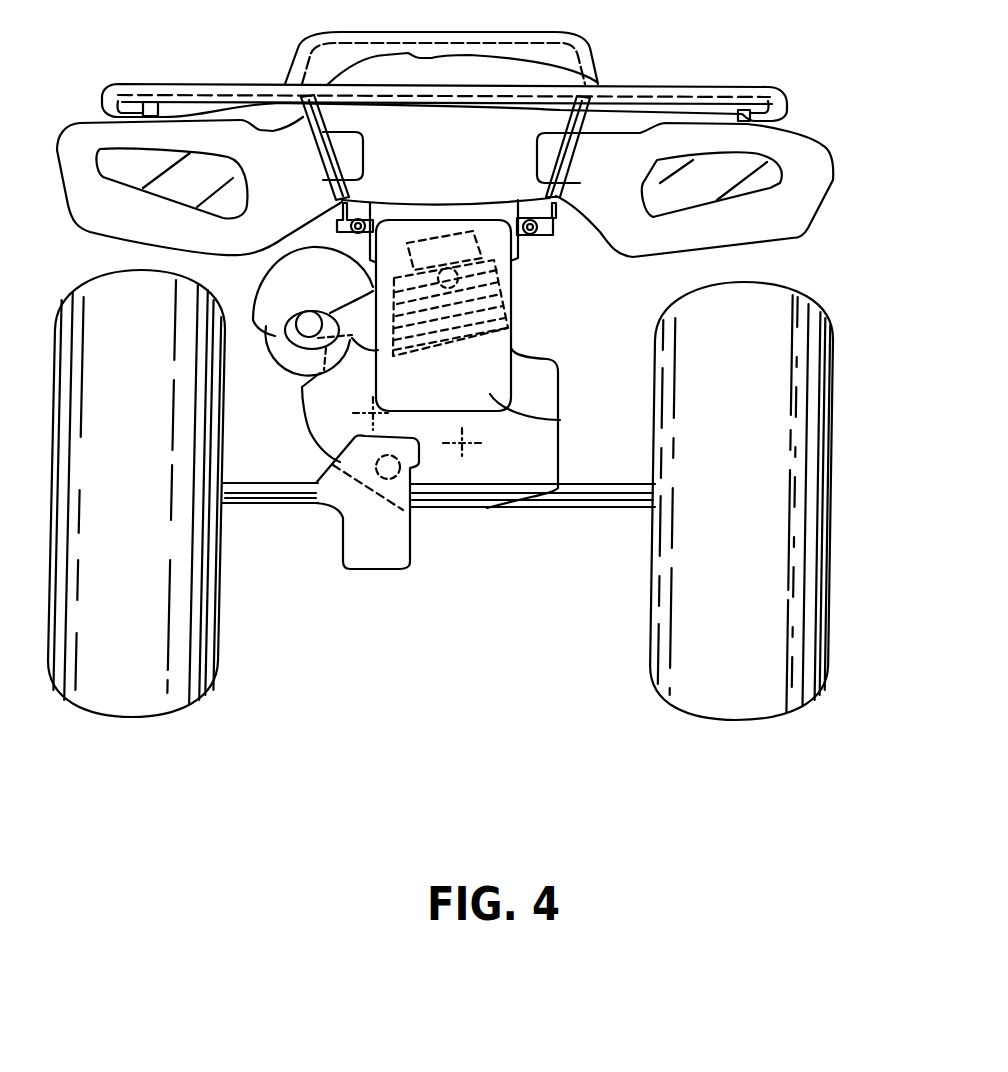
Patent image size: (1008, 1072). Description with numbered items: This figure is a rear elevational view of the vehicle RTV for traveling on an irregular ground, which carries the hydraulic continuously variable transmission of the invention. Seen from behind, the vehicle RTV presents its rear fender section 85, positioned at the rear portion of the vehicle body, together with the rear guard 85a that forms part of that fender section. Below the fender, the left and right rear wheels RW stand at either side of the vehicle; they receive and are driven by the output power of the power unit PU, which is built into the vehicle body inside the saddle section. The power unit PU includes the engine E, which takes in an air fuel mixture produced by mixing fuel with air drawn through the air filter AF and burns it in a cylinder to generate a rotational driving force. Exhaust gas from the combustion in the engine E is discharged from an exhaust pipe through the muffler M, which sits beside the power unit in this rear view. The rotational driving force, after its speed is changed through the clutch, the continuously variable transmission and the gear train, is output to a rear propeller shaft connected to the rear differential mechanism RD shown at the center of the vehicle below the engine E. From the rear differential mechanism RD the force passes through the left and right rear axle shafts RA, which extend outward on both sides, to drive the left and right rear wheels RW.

The rear fender section 85 is at (527, 123).
The rear guard 85a is at (723, 97).
The vehicle for traveling on an irregular ground RTV is at (833, 100).
The rear wheels RW is at (773, 308).
The rear axle shafts RA is at (257, 506).
The rear differential mechanism RD is at (393, 557).
The power unit PU is at (549, 354).
The engine E is at (513, 290).
The air filter AF is at (560, 420).
The muffler M is at (290, 349).